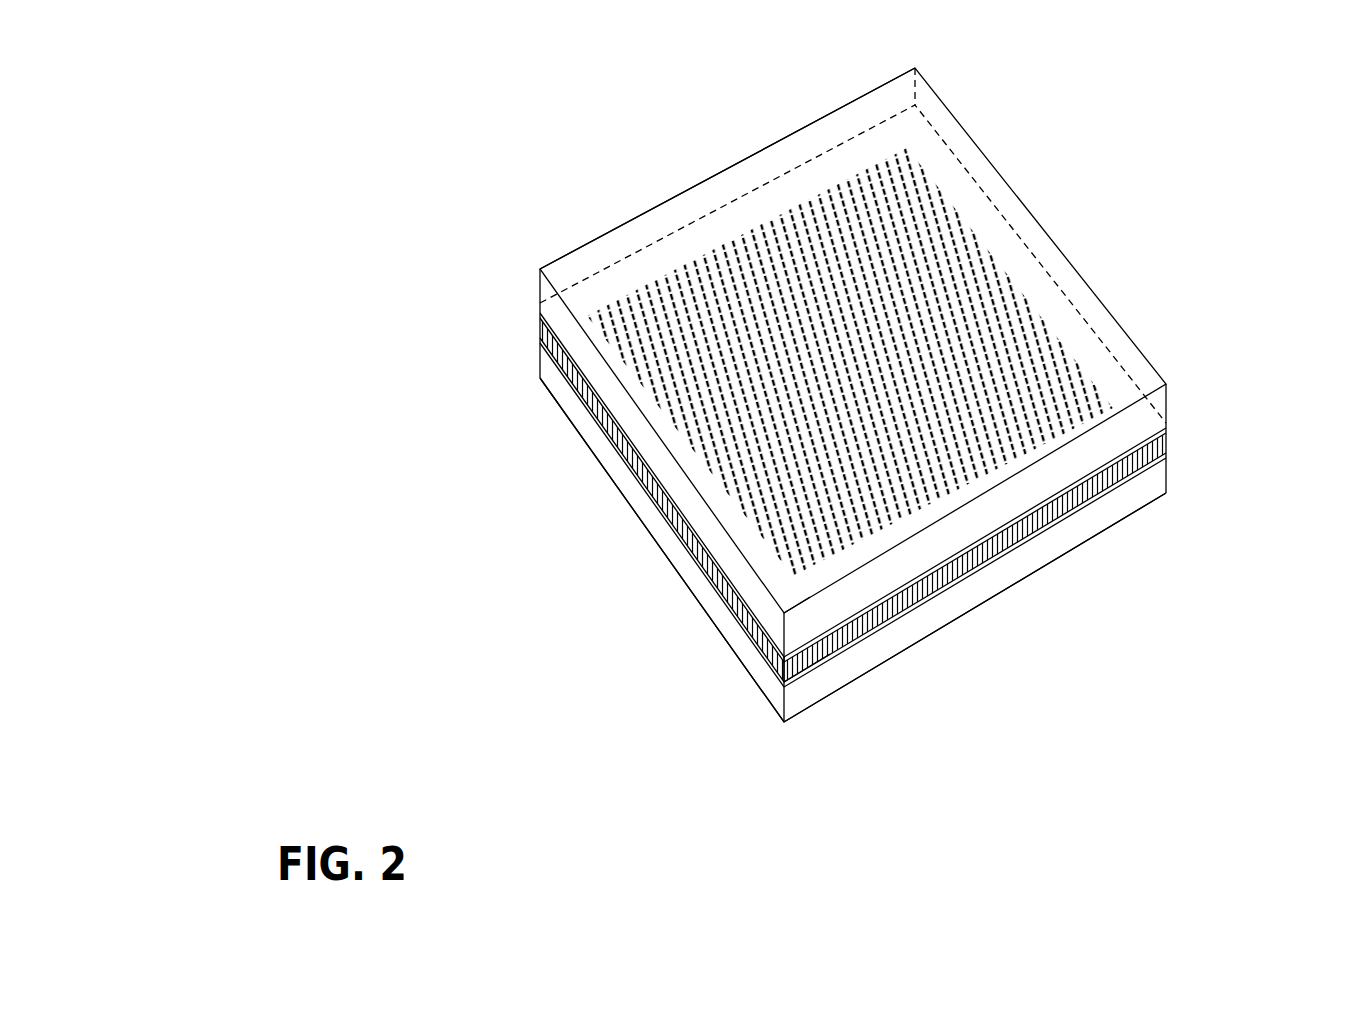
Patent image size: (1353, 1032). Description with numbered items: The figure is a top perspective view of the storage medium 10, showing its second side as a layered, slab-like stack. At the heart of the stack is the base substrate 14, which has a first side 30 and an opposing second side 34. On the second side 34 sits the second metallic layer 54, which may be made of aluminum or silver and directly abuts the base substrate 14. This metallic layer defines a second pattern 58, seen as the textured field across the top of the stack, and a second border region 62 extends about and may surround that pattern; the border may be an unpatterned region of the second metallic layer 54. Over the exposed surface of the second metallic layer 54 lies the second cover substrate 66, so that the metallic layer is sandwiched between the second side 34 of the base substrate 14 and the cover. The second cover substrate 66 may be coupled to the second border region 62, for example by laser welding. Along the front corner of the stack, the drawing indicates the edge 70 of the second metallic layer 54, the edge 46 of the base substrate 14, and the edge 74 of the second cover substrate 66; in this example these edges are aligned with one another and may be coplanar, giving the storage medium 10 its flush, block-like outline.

The storage medium 10 is at (520, 150).
The base substrate 14 is at (1178, 444).
The first side 30 is at (1133, 472).
The second side 34 is at (1130, 447).
The edge of the base substrate 46 is at (812, 660).
The second metallic layer 54 is at (1178, 427).
The second pattern 58 is at (998, 292).
The second border region 62 is at (1113, 383).
The second cover substrate 66 is at (686, 186).
The edge of the second metallic layer 70 is at (777, 673).
The edge of the second cover substrate 74 is at (800, 620).